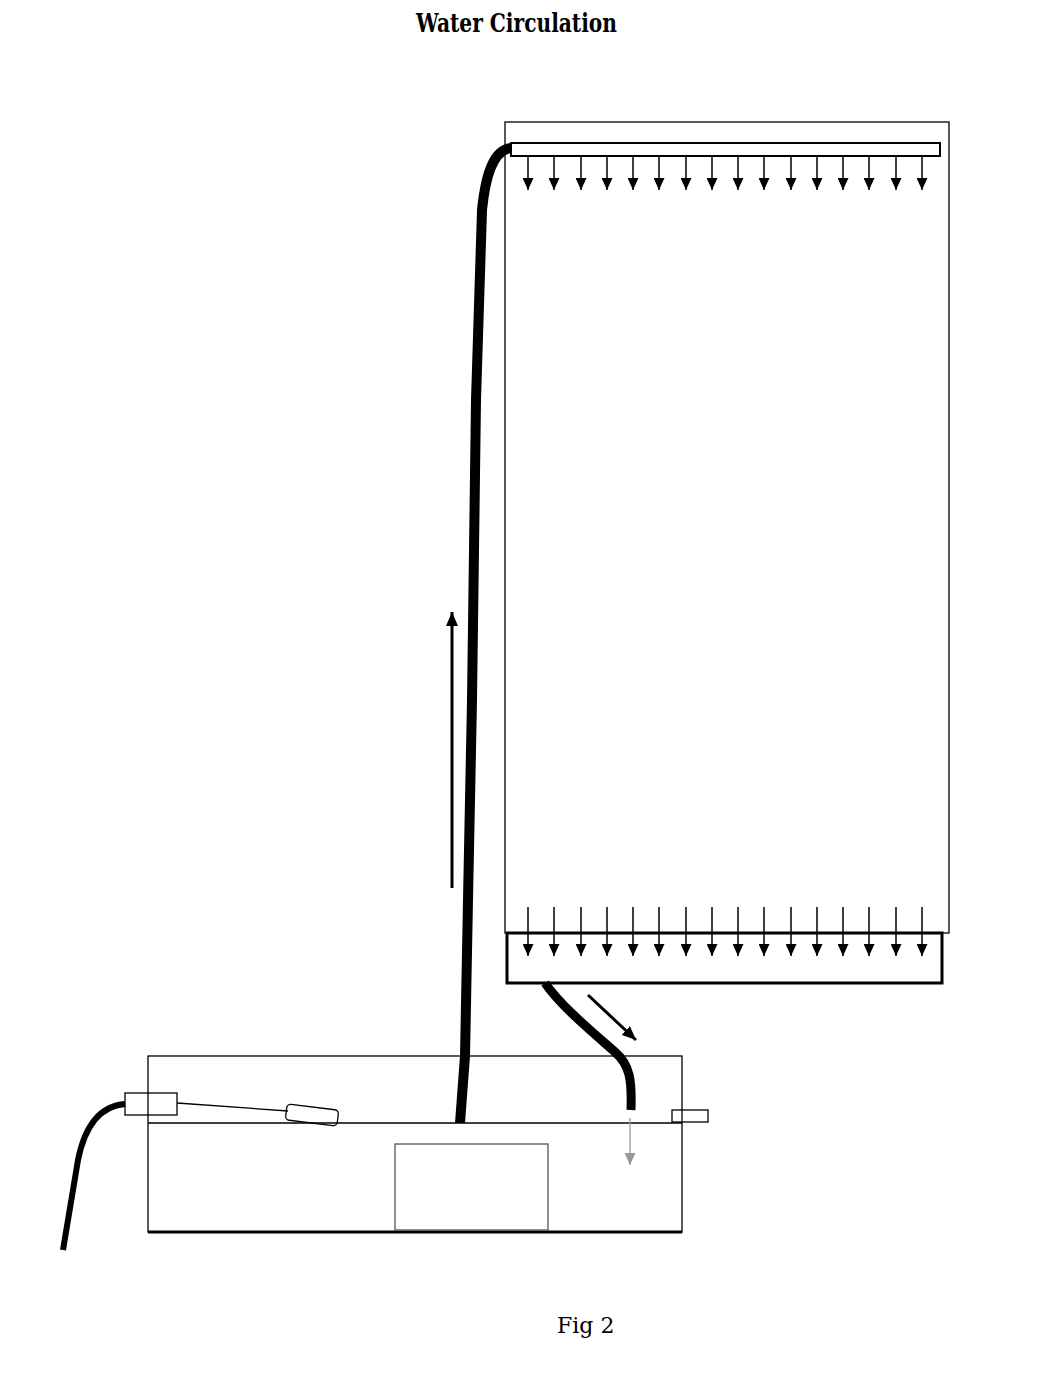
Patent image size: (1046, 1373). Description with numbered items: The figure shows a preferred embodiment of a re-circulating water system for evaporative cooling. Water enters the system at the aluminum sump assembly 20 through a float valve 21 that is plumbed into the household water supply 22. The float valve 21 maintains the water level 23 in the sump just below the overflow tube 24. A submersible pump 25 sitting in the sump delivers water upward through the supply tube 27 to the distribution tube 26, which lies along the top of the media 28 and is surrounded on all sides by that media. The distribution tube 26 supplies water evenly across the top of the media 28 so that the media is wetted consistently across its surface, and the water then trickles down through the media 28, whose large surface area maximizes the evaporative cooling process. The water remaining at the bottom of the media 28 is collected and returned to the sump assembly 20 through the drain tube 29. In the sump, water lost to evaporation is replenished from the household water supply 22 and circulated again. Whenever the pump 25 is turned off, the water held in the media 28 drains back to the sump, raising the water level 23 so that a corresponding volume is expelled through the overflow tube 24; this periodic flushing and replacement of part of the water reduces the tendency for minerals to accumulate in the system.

The sump assembly 20 is at (397, 1045).
The float valve 21 is at (160, 1100).
The household water supply 22 is at (104, 1098).
The water level 23 is at (360, 1124).
The overflow tube 24 is at (705, 1126).
The submersible pump 25 is at (465, 1190).
The distribution tube 26 is at (595, 140).
The supply tube 27 is at (470, 332).
The media 28 is at (665, 481).
The drain tube 29 is at (642, 1083).